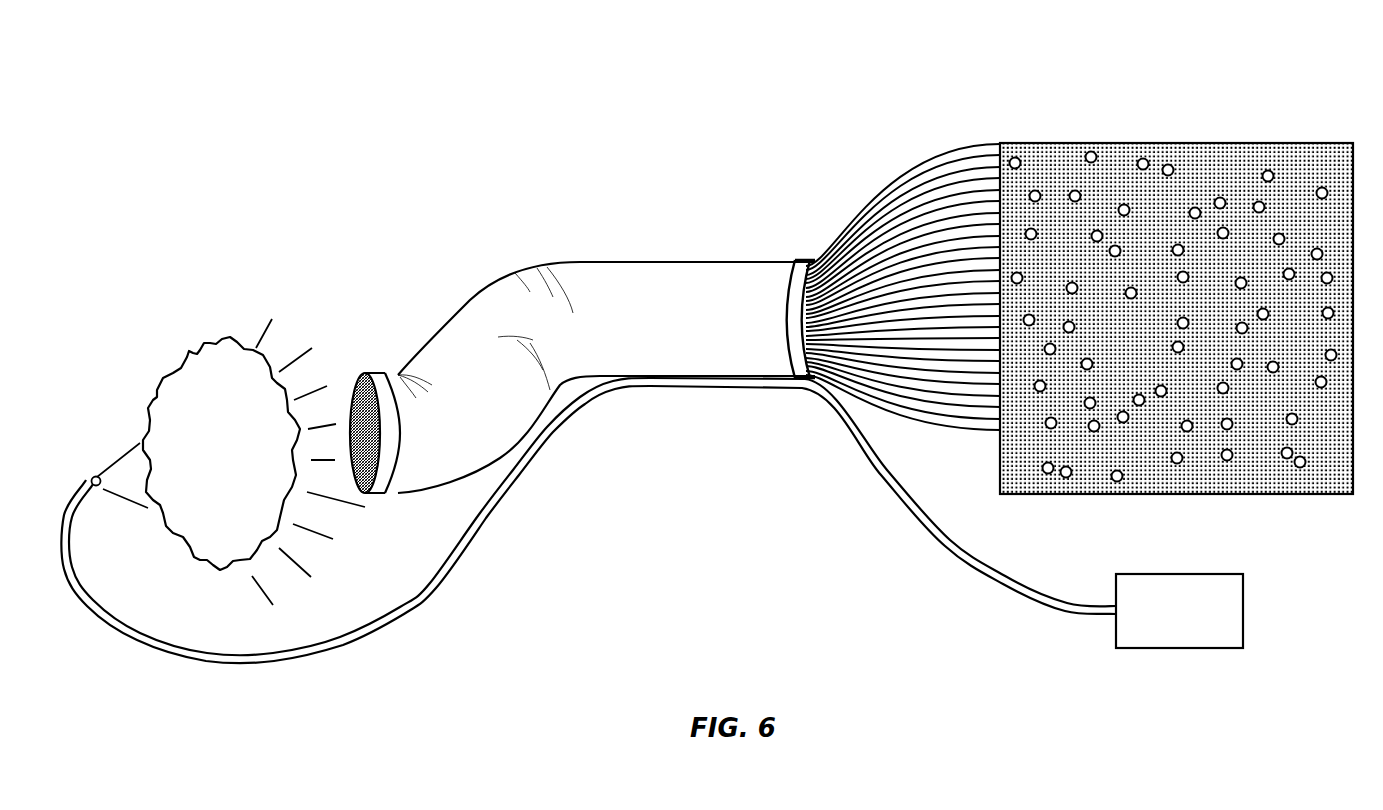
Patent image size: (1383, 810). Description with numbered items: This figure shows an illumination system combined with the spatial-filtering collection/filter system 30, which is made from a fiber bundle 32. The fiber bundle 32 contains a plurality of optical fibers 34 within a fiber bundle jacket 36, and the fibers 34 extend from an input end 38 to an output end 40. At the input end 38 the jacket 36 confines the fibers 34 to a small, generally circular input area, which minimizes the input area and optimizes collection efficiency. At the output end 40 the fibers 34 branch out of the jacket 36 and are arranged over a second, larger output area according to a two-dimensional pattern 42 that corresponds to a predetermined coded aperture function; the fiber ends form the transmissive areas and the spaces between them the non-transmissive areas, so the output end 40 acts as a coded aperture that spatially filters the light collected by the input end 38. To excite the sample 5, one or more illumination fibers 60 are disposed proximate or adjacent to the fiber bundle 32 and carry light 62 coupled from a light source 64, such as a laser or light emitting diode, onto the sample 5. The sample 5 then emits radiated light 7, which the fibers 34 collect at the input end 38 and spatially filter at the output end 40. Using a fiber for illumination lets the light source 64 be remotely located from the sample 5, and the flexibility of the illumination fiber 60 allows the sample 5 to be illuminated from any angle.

The sample 5 is at (190, 400).
The radiated light 7 is at (257, 316).
The collection/filter system 30 is at (848, 110).
The fiber bundle 32 is at (672, 252).
The optical fibers 34 is at (1106, 140).
The fiber bundle jacket 36 is at (602, 275).
The input end 38 is at (372, 493).
The output end 40 is at (1172, 126).
The two-dimensional pattern 42 is at (1300, 140).
The illumination fiber 60 is at (888, 466).
The light 62 is at (130, 447).
The light source 64 is at (1247, 590).